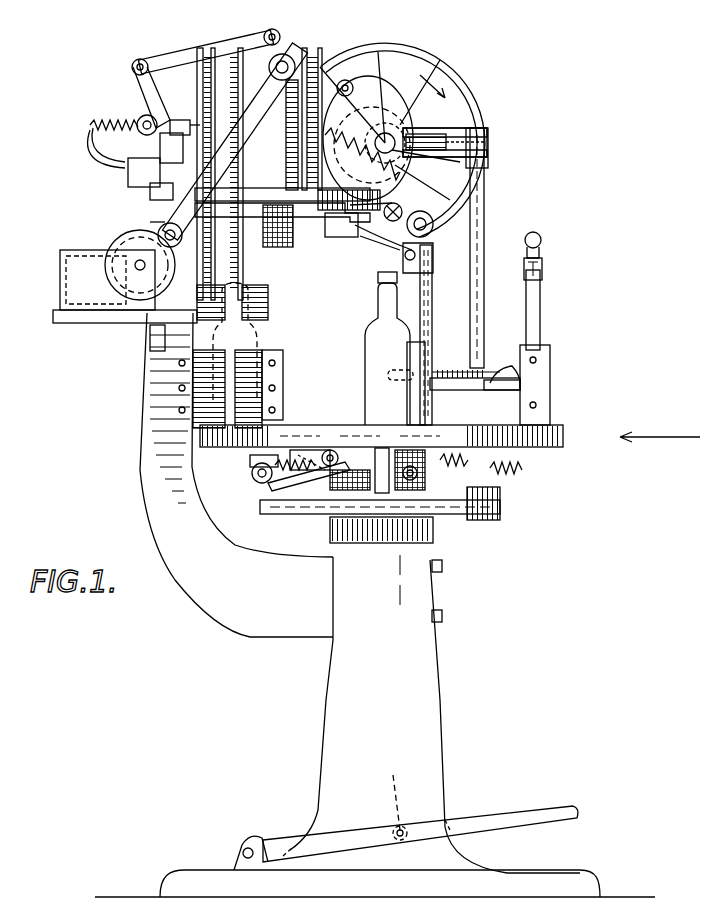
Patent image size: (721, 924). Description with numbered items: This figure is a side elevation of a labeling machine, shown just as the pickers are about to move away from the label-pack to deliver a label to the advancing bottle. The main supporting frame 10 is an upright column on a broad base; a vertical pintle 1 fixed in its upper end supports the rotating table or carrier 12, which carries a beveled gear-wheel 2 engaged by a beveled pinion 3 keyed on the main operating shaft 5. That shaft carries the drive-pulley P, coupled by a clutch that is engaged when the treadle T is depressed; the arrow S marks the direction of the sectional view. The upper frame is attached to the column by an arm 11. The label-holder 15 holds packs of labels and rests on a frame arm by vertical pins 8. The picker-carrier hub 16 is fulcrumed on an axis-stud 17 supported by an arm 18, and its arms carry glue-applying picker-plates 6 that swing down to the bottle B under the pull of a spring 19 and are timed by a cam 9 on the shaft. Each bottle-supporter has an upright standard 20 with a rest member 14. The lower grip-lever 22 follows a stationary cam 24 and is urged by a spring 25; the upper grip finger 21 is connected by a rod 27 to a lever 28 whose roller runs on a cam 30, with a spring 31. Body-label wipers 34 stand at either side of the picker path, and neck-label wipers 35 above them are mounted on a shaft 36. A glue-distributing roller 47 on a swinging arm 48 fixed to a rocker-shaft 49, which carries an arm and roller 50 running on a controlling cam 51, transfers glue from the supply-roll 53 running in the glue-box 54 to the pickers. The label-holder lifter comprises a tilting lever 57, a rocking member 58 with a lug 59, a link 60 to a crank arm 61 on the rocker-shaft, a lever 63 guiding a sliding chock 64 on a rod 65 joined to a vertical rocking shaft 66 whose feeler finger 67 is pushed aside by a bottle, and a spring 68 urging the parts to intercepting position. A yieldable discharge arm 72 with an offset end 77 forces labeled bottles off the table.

The vertical pintle or shaft 1 is at (259, 167).
The beveled gear-wheel 2 is at (488, 165).
The beveled pinion 3 is at (400, 130).
The main operating shaft 5 is at (395, 135).
The glue-applying picker-plates 6 is at (247, 210).
The vertical pins 8 is at (140, 143).
The cam 9 is at (393, 100).
The main supporting frame 10 is at (375, 707).
The arm 11 is at (193, 473).
The rotating table or carrier 12 is at (565, 447).
The rest or cradle member 14 is at (425, 352).
The label-holder 15 is at (282, 193).
The rocking carrier or hub 16 is at (385, 215).
The horizontal axis-stud 17 is at (370, 238).
The arm on the frame 18 is at (327, 230).
The spring 19 is at (362, 160).
The upright standard 20 is at (432, 295).
The knob 21 is at (541, 240).
The pivot block 22 is at (340, 452).
The stationary actuating cam 24 is at (415, 490).
The spring 25 is at (300, 507).
The rod 27 is at (542, 270).
The lever 28 is at (270, 485).
The stationary cam 30 is at (490, 515).
The spring 31 is at (252, 475).
The body-label wipers 34 is at (190, 375).
The neck-label wipers 35 is at (260, 313).
The shaft 36 is at (253, 250).
The glue-distributing roller 47 is at (165, 232).
The swinging arm 48 is at (158, 216).
The rocker-shaft 49 is at (285, 62).
The arm and roller 50 is at (347, 73).
The controlling cam 51 is at (395, 133).
The disk 53 is at (140, 248).
The glue-box or reservoir 54 is at (88, 273).
The tilting lever 57 is at (153, 192).
The rocking member 58 is at (145, 95).
The lug or detent 59 is at (165, 115).
The link 60 is at (185, 58).
The crank arm 61 is at (269, 23).
The lever 63 is at (180, 148).
The sliding chock 64 is at (180, 120).
The rod 65 is at (450, 130).
The vertical rocking shaft 66 is at (486, 200).
The feeler member or curved finger 67 is at (455, 390).
The spring 68 is at (115, 124).
The discharge arm or lever 72 is at (505, 372).
The offset end 77 is at (500, 390).
The bottle B is at (389, 348).
The drive-pulley P is at (384, 45).
The arrow S is at (660, 439).
The treadle T is at (526, 820).